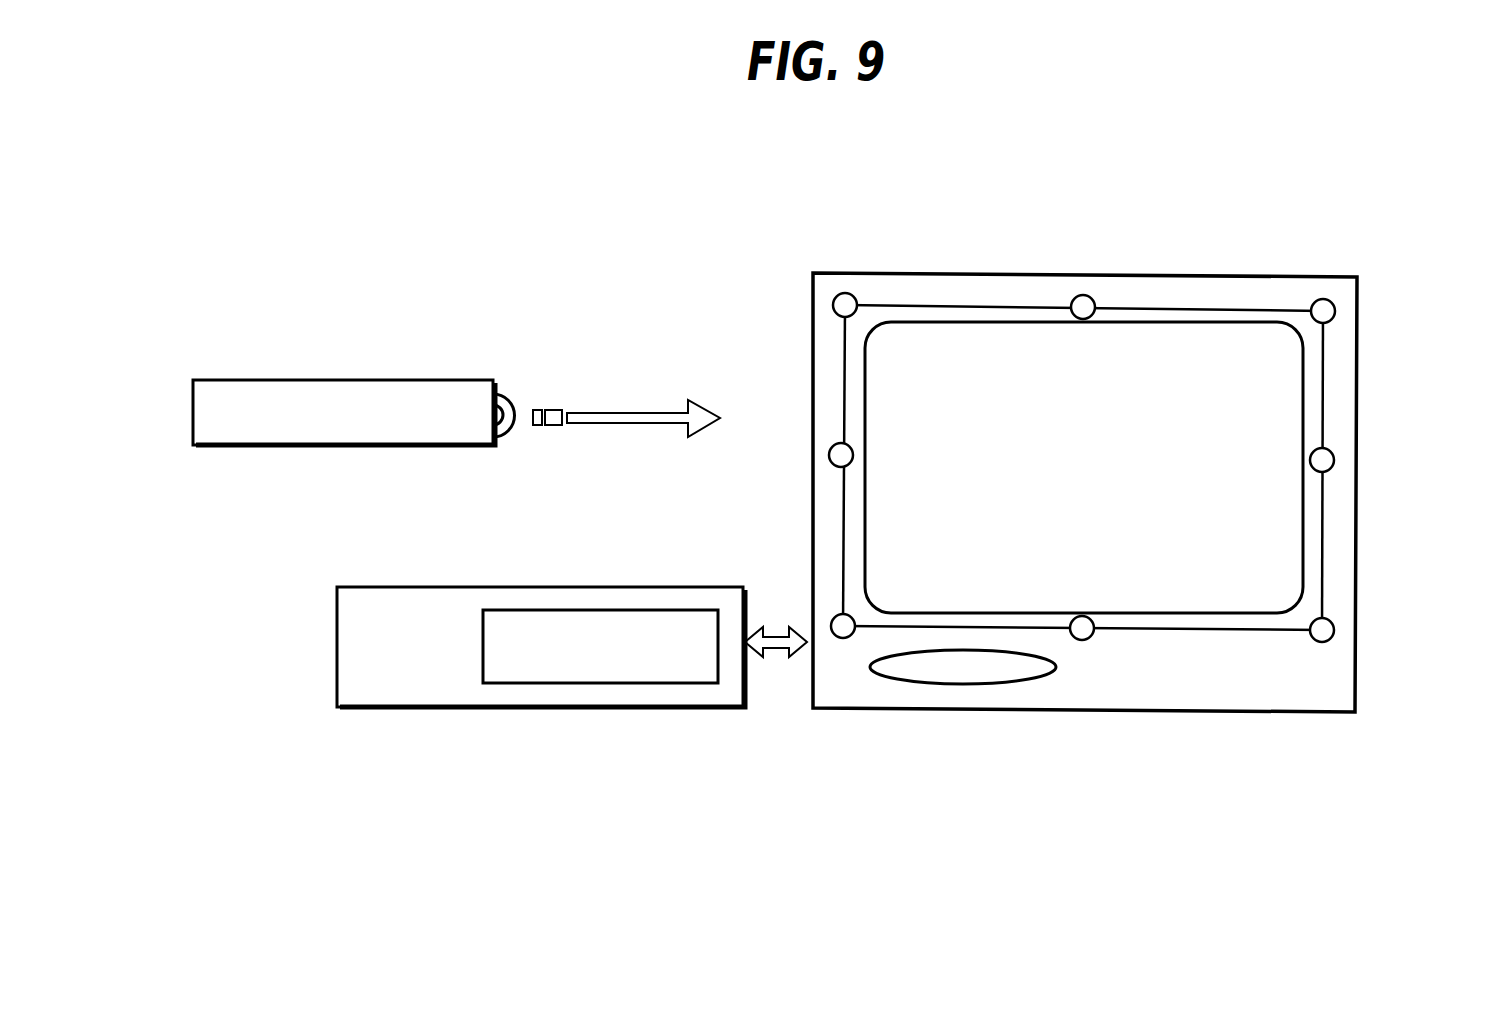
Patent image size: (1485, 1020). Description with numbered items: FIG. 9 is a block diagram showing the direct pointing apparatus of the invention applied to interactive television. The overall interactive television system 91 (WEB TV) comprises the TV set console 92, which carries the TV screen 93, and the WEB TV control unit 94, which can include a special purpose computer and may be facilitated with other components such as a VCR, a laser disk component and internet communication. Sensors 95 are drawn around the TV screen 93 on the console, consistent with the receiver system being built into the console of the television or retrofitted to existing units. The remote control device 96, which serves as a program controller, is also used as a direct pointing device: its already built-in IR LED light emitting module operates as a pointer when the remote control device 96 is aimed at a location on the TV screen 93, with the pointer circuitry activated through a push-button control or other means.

The overall interactive television system 91 is at (758, 237).
The TV set console 92 is at (1195, 275).
The TV screen 93 is at (1277, 540).
The WEB TV control unit 94 is at (572, 708).
The sensors 95 is at (1335, 452).
The remote control device 96 is at (373, 380).